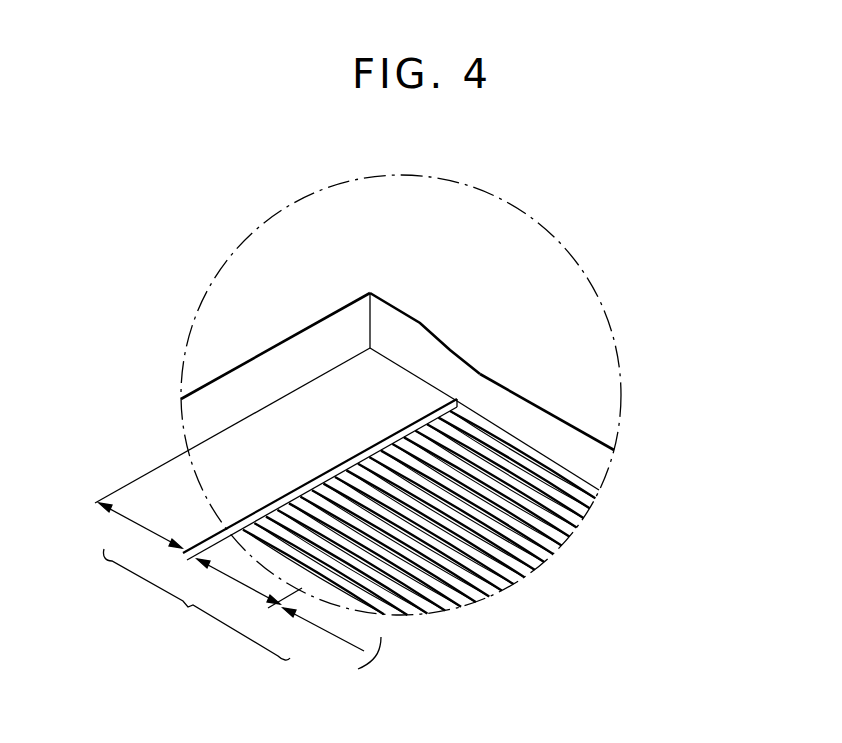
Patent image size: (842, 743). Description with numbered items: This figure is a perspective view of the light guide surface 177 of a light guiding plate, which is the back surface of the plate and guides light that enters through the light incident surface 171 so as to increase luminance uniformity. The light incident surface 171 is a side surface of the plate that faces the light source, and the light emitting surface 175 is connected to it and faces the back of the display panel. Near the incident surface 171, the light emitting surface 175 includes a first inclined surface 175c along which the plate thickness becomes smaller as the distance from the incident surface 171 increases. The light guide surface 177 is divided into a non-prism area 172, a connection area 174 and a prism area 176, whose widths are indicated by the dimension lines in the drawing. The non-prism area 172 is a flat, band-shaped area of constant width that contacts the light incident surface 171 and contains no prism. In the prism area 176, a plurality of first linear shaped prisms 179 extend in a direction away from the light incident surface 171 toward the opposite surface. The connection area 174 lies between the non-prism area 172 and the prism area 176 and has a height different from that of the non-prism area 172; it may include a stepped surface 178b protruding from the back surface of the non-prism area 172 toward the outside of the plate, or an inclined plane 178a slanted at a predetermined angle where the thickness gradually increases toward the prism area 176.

The light incident surface 171 is at (195, 419).
The non-prism area 172 is at (140, 528).
The connection area 174 is at (249, 583).
The light emitting surface 175 is at (575, 427).
The first inclined surface 175c is at (441, 344).
The prism area 176 is at (332, 638).
The light guide surface 177 is at (196, 604).
The inclined plane 178a is at (482, 430).
The stepped surface 178b is at (425, 413).
The first linear shaped prisms 179 is at (548, 493).